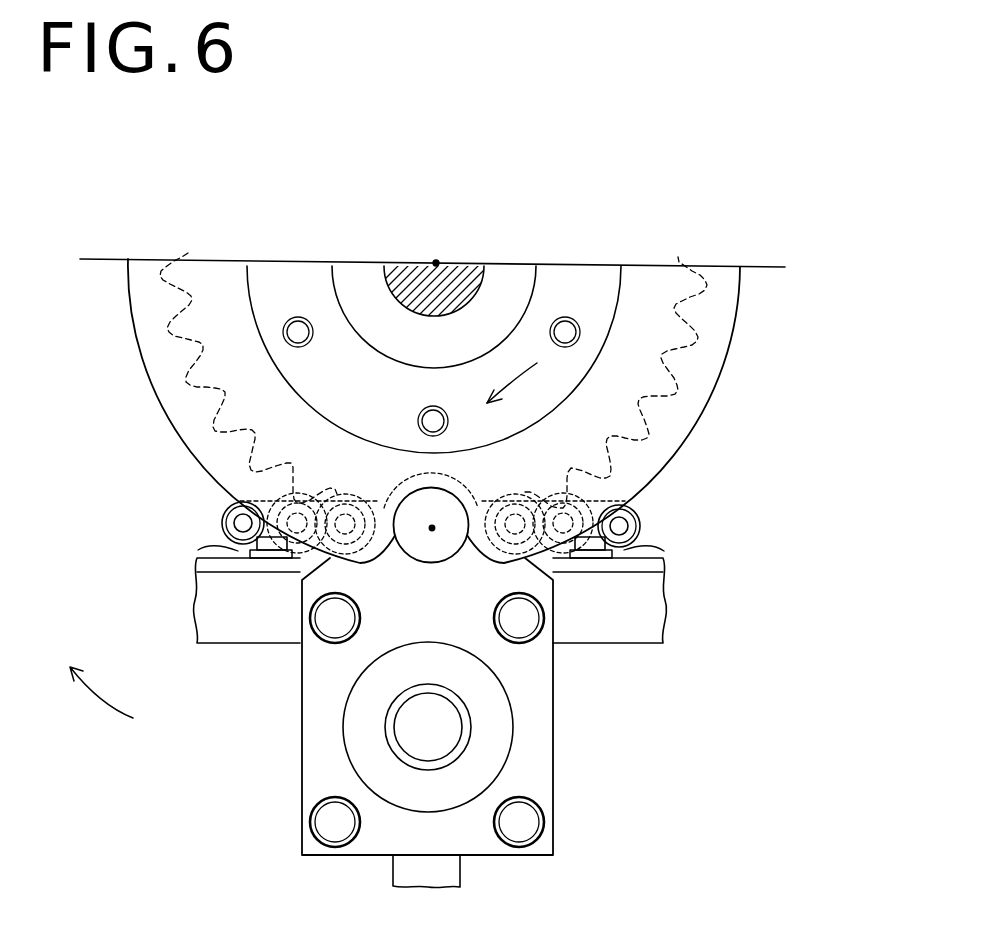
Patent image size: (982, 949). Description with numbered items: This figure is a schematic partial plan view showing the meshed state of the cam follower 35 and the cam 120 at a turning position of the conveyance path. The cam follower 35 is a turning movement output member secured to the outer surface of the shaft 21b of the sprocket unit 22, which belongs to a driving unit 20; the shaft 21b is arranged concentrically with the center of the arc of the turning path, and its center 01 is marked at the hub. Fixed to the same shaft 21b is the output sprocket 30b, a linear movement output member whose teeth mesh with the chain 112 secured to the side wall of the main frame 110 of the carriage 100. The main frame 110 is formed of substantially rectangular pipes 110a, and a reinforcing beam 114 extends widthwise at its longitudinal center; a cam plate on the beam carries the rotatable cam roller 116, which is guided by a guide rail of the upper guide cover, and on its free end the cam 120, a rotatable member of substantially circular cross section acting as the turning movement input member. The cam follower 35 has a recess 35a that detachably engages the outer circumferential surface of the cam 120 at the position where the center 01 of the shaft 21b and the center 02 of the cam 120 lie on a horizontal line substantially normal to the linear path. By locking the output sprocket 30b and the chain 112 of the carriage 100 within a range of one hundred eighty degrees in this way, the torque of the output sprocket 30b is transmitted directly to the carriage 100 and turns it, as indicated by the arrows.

The center of the shaft 01 is at (436, 263).
The shaft 21b is at (455, 278).
The output sprocket 30b is at (188, 372).
The cam follower 35 is at (700, 391).
The chain 112 is at (203, 485).
The center of the cam 02 is at (432, 528).
The cam 120 is at (473, 503).
The sprocket unit 22 is at (474, 361).
The driving unit 20 is at (474, 361).
The carriage 100 is at (464, 678).
The rectangular pipes 110a is at (527, 604).
The main frame 110 is at (654, 628).
The recess 35a is at (465, 519).
The cam roller 116 is at (498, 737).
The reinforcing beam 114 is at (442, 868).